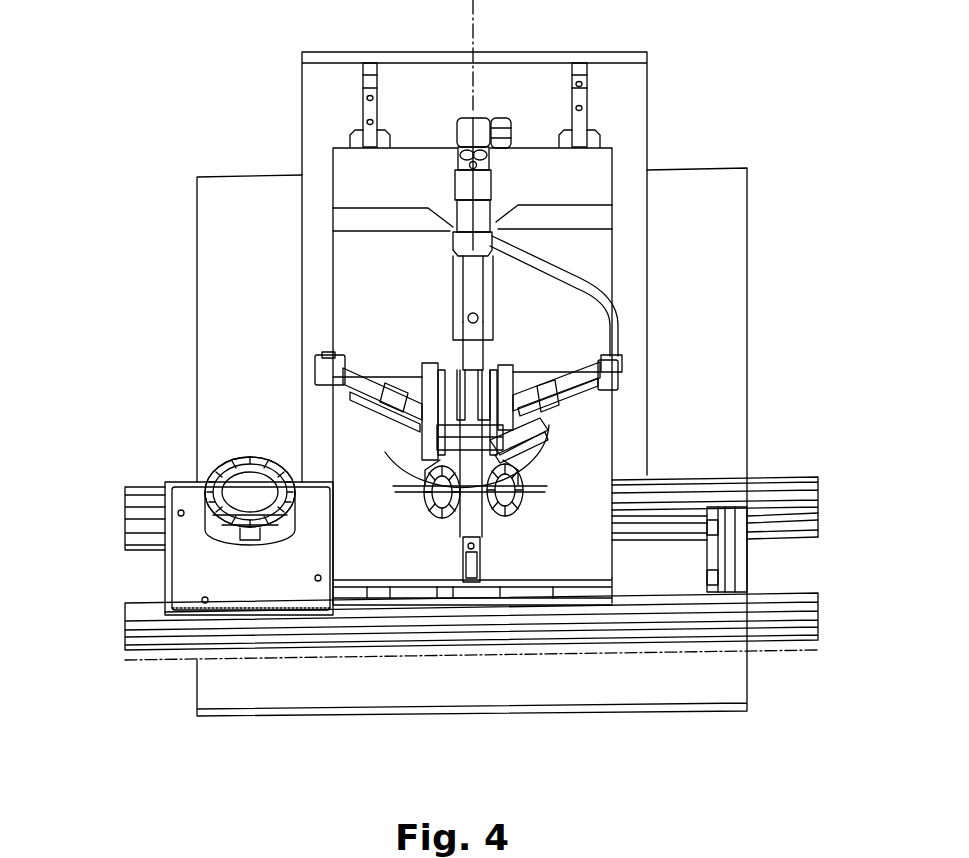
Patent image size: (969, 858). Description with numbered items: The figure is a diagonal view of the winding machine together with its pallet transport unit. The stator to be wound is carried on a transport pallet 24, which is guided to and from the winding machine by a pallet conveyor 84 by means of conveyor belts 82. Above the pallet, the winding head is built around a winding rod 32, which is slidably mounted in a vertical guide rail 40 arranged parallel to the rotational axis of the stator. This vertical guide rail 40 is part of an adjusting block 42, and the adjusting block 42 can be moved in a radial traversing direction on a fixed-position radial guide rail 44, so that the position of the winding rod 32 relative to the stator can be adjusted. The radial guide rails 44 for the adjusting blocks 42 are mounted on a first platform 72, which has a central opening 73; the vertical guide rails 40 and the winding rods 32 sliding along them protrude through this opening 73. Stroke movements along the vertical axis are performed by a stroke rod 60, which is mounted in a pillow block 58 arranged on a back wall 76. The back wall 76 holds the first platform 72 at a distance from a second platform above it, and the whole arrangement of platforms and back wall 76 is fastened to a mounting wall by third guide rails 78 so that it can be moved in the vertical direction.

The transport pallet 24 is at (188, 587).
The winding rod 32 is at (510, 362).
The vertical guide rail 40 is at (540, 382).
The adjusting block 42 is at (560, 458).
The radial guide rail 44 is at (560, 425).
The pillow block 58 is at (455, 347).
The stroke rod 60 is at (468, 320).
The first platform 72 is at (380, 560).
The central opening 73 is at (400, 457).
The back wall 76 is at (395, 258).
The third guide rails 78 is at (583, 108).
The conveyor belts 82 is at (813, 607).
The pallet conveyor 84 is at (838, 637).